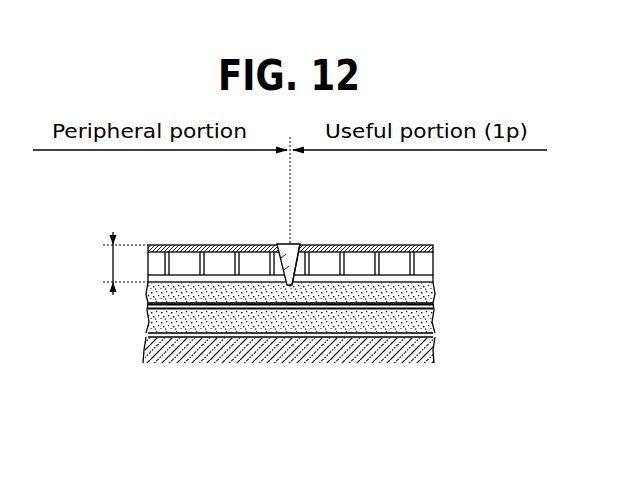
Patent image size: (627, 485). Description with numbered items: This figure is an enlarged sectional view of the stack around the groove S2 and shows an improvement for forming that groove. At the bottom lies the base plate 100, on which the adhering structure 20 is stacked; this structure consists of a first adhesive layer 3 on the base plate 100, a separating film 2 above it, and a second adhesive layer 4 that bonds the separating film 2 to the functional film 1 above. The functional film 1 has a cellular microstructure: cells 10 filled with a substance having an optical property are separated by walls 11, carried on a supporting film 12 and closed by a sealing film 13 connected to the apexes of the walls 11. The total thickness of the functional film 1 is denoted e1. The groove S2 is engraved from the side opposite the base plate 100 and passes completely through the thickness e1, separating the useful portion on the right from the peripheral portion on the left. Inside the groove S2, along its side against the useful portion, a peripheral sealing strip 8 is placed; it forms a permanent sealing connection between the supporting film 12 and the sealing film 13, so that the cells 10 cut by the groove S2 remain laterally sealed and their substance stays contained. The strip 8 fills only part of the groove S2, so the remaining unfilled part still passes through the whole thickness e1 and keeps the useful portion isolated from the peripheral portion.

The functional film 1 is at (433, 245).
The separating film 2 is at (418, 307).
The first adhesive layer 3 is at (418, 322).
The second adhesive layer 4 is at (418, 293).
The peripheral sealing strip 8 is at (297, 258).
The cells 10 is at (217, 262).
The separating walls 11 is at (273, 262).
The supporting film 12 is at (352, 278).
The sealing film 13 is at (400, 248).
The adhering structure 20 is at (433, 333).
The base plate 100 is at (353, 352).
The groove S2 is at (280, 240).
The total thickness of the functional film e1 is at (115, 263).